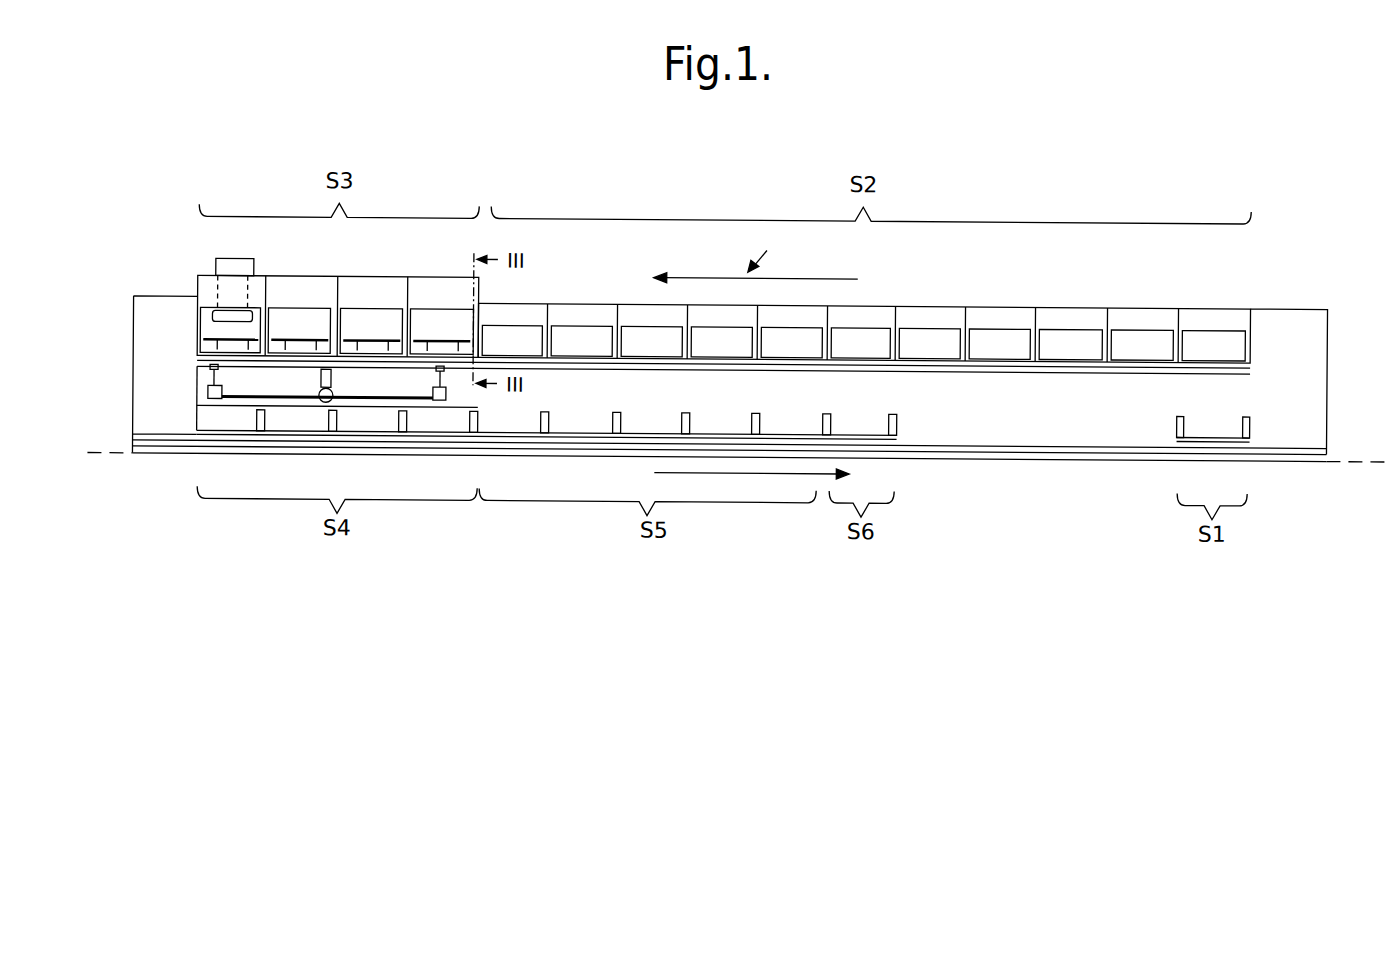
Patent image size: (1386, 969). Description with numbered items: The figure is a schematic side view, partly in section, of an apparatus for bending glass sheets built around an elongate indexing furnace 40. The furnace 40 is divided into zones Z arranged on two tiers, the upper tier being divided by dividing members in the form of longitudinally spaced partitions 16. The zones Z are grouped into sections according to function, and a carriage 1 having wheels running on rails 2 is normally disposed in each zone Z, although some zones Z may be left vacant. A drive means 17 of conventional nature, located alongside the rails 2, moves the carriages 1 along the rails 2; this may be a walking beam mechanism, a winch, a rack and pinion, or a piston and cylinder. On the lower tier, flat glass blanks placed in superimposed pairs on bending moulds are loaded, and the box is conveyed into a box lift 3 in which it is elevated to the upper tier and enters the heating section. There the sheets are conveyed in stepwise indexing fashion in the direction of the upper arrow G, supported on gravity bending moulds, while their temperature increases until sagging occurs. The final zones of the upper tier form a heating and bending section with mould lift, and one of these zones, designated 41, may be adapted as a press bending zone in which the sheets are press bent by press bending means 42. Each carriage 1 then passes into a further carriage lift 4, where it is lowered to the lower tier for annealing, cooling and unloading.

The carriage 1 is at (1073, 346).
The rails 2 is at (628, 377).
The box lift 3 is at (1302, 322).
The carriage lift 4 is at (169, 314).
The partitions 16 is at (338, 290).
The drive means 17 is at (713, 363).
The indexing furnace 40 is at (770, 249).
The press bending zone 41 is at (206, 289).
The press bending means 42 is at (234, 268).
The zones Z is at (436, 287).
The direction of conveyance G is at (756, 379).